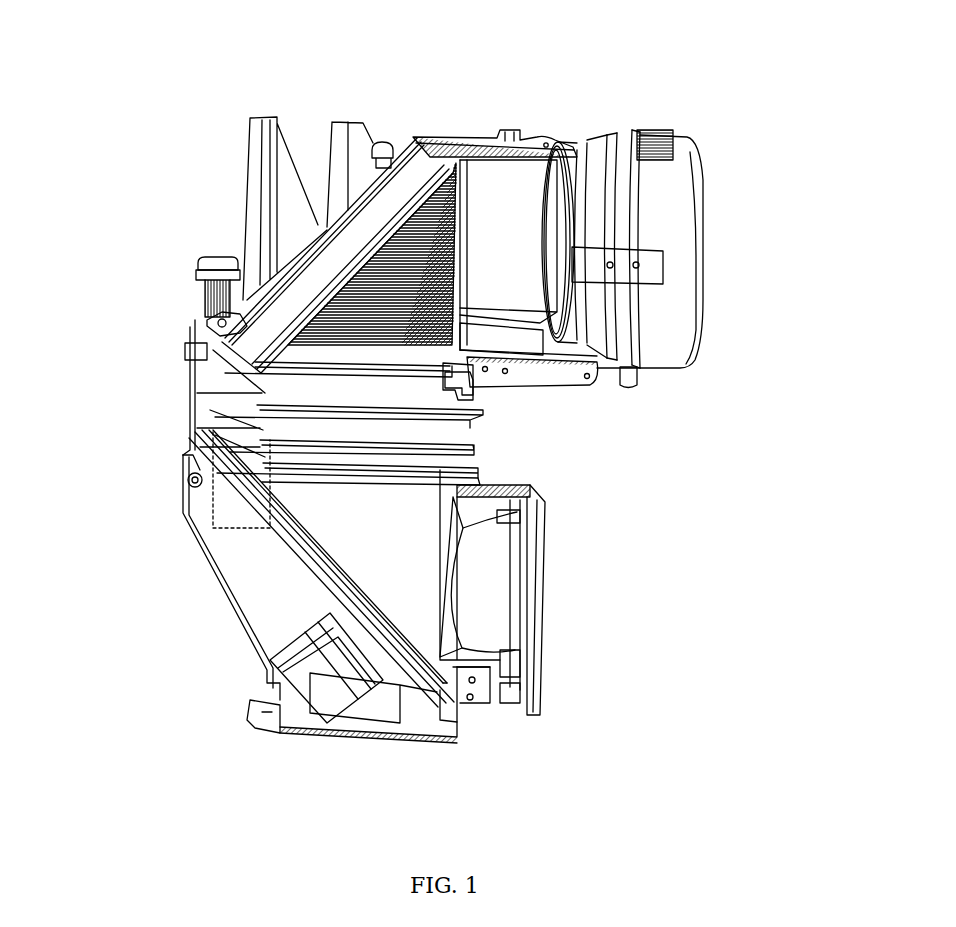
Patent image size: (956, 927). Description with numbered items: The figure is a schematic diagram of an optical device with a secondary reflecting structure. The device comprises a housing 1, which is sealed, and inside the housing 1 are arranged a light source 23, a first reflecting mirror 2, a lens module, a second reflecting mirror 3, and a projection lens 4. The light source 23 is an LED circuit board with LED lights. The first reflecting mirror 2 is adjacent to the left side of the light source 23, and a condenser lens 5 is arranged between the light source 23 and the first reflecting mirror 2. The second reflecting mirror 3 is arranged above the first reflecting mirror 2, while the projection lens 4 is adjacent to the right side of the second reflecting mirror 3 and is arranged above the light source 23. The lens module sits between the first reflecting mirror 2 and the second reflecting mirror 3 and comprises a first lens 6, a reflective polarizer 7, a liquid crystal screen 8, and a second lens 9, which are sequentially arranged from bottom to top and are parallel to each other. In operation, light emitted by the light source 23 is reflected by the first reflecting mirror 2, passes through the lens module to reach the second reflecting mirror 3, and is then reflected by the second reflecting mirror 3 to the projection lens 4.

The housing 1 is at (460, 145).
The first reflecting mirror 2 is at (465, 712).
The second reflecting mirror 3 is at (408, 190).
The projection lens 4 is at (670, 212).
The condenser lens 5 is at (500, 580).
The first lens 6 is at (257, 478).
The reflective polarizer 7 is at (267, 455).
The liquid crystal screen 8 is at (267, 430).
The second lens 9 is at (267, 393).
The light source 23 is at (540, 613).